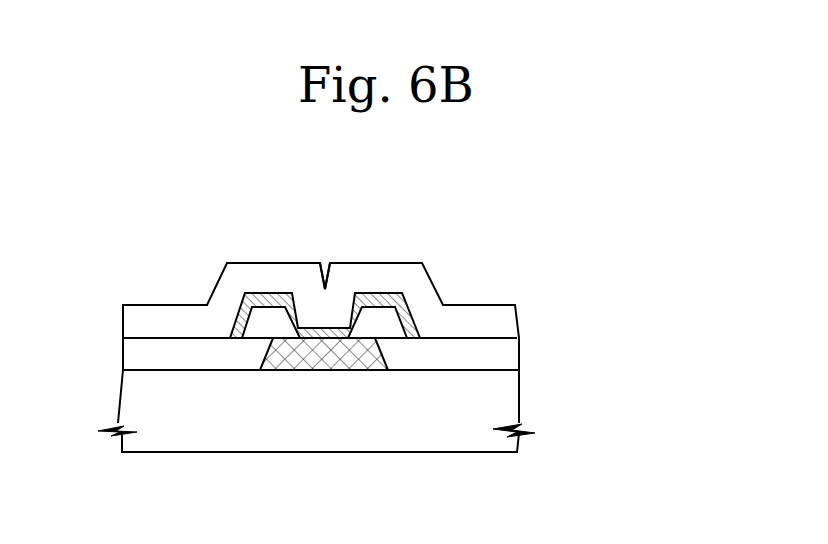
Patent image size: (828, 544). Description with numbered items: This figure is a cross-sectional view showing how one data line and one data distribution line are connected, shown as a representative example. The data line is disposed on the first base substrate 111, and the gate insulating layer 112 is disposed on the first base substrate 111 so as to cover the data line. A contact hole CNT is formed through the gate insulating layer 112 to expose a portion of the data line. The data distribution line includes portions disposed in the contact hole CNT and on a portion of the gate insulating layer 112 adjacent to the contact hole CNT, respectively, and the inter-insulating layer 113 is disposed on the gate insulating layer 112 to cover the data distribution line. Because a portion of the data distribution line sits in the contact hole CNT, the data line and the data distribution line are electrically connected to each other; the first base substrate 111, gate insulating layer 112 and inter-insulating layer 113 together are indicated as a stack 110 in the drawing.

The substrate 110 is at (377, 357).
The first base substrate 111 is at (500, 403).
The gate insulating layer 112 is at (508, 352).
The inter-insulating layer 113 is at (359, 316).
The contact hole CNT is at (313, 317).